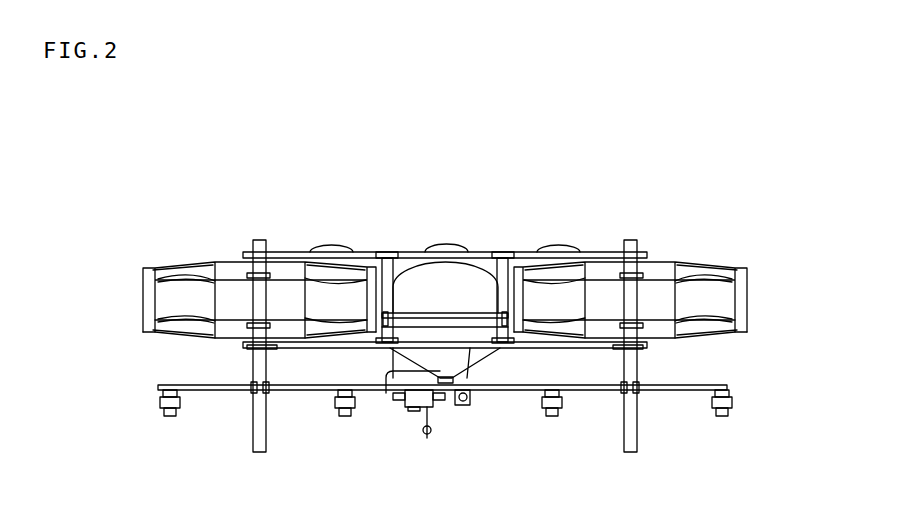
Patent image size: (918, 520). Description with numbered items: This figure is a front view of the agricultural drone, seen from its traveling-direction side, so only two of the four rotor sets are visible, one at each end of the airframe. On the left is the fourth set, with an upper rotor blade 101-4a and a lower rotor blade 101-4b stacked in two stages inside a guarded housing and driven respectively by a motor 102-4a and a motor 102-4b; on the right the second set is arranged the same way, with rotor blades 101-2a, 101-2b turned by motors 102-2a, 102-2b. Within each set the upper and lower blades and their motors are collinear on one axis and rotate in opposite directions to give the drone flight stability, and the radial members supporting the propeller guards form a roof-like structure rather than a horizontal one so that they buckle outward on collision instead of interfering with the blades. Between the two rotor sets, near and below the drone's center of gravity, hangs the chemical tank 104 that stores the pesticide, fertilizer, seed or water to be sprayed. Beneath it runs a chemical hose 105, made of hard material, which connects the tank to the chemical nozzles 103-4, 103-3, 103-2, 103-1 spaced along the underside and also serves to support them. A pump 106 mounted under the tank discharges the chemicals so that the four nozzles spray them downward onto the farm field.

The rotor blade 101-4a is at (192, 262).
The rotor blade 101-4b is at (185, 333).
The motor 102-4a is at (283, 275).
The motor 102-4b is at (245, 274).
The rotor blade 101-2a is at (700, 262).
The rotor blade 101-2b is at (702, 333).
The motor 102-2a is at (606, 275).
The motor 102-2b is at (652, 274).
The chemical tank 104 is at (483, 365).
The chemical hose 105 is at (215, 394).
The pump 106 is at (407, 410).
The chemical nozzle 103-1 is at (721, 420).
The chemical nozzle 103-2 is at (551, 420).
The chemical nozzle 103-3 is at (344, 420).
The chemical nozzle 103-4 is at (169, 420).